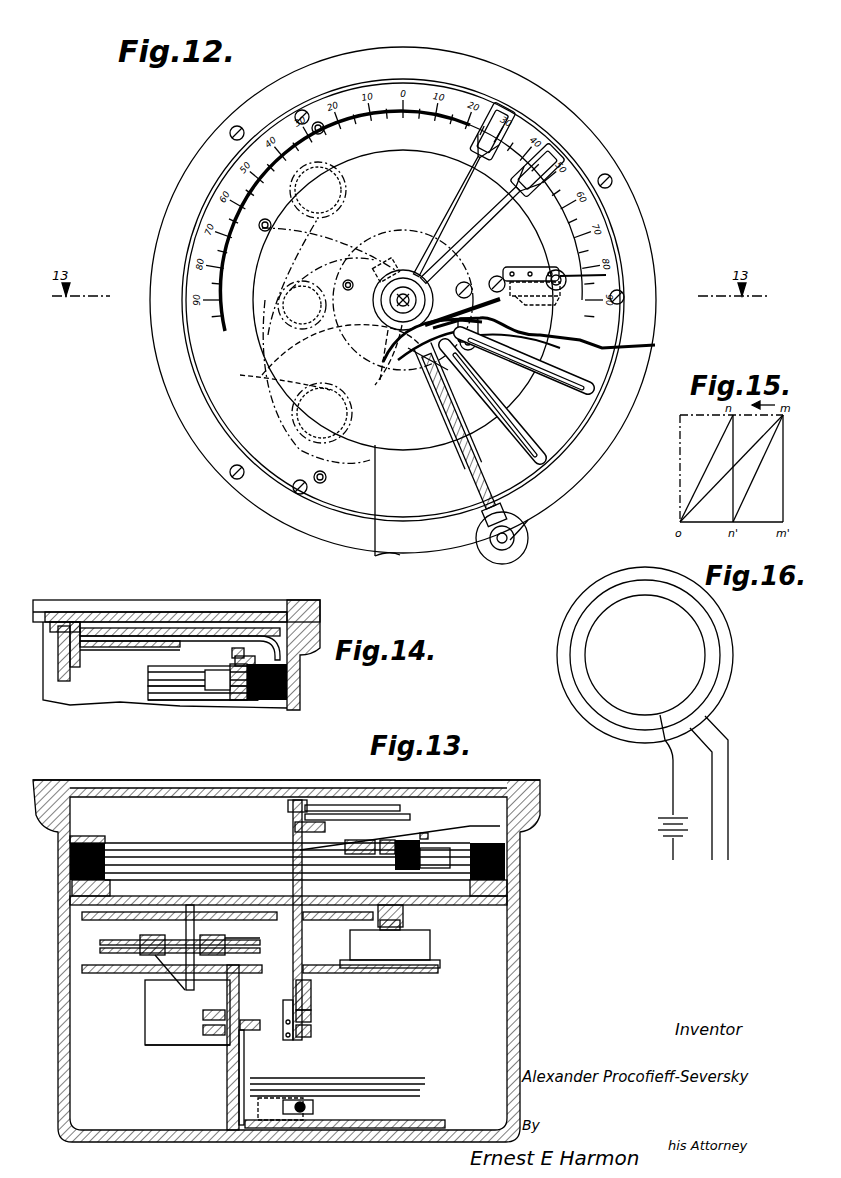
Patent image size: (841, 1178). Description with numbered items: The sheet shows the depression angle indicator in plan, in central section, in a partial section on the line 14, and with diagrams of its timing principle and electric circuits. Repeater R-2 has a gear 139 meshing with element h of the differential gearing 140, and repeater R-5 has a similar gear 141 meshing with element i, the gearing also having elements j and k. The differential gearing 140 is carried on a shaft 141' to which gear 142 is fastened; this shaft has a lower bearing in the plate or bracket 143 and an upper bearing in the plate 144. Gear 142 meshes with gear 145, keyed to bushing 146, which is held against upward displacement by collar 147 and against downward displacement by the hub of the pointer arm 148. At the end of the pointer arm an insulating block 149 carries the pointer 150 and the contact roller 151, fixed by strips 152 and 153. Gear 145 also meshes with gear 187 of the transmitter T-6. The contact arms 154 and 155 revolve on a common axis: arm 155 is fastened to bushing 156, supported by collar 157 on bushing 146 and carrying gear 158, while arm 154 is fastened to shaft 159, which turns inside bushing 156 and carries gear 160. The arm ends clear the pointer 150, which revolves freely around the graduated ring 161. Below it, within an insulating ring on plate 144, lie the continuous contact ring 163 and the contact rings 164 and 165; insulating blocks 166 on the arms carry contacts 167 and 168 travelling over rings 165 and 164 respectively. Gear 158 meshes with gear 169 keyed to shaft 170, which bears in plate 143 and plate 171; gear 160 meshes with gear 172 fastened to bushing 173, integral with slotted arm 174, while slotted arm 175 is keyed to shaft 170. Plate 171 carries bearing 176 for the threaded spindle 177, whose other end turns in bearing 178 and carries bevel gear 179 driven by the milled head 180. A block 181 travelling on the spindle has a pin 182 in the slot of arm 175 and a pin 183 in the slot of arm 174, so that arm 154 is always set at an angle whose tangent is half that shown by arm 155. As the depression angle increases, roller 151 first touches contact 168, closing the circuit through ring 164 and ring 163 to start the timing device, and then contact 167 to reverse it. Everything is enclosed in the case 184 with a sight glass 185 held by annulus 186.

In FIG. 12, the section line 14— 14 is at (455, 180).
In FIG. 12, the gear 139 is at (305, 413).
In FIG. 12, the differential gearing 140 is at (230, 375).
In FIG. 13, the differential gearing 140 is at (149, 947).
In FIG. 12, the gear 141 is at (403, 300).
In FIG. 13, the shaft 141' is at (166, 1012).
In FIG. 12, the gear 142 is at (292, 305).
In FIG. 13, the gear 142 is at (170, 935).
In FIG. 13, the plate or bracket 143 is at (105, 975).
In FIG. 13, the plate 144 is at (72, 905).
In FIG. 12, the gear 145 is at (320, 338).
In FIG. 13, the gear 145 is at (350, 920).
In FIG. 13, the bushing 146 is at (312, 995).
In FIG. 13, the collar 147 is at (325, 972).
In FIG. 13, the pointer arm 148 is at (292, 845).
In FIG. 13, the insulating block 149 is at (395, 842).
In FIG. 12, the pointer 150 is at (606, 276).
In FIG. 13, the pointer 150 is at (430, 835).
In FIG. 12, the contact roller 151 is at (556, 270).
In FIG. 13, the contact roller 151 is at (490, 872).
In FIG. 12, the strip 152 is at (522, 268).
In FIG. 13, the strip 152 is at (405, 845).
In FIG. 13, the strip 153 is at (412, 872).
In FIG. 12, the contact arm 154 is at (432, 212).
In FIG. 14, the contact arm 154 is at (130, 630).
In FIG. 13, the contact arm 154 is at (325, 805).
In FIG. 12, the contact arm 155 is at (472, 212).
In FIG. 14, the contact arm 155 is at (135, 645).
In FIG. 13, the contact arm 155 is at (360, 812).
In FIG. 13, the bushing 156 is at (312, 1015).
In FIG. 14, the collar 157 is at (80, 668).
In FIG. 13, the collar 157 is at (319, 830).
In FIG. 13, the gear 158 is at (312, 1032).
In FIG. 14, the shaft 159 is at (64, 680).
In FIG. 13, the shaft 159 is at (286, 1040).
In FIG. 13, the gear 160 is at (292, 1038).
In FIG. 12, the graduated ring 161 is at (420, 82).
In FIG. 12, the continuous contact ring 163 is at (380, 458).
In FIG. 16, the continuous contact ring 163 is at (680, 606).
In FIG. 14, the continuous contact ring 163 is at (170, 695).
In FIG. 16, the contact ring 164 is at (720, 661).
In FIG. 14, the contact ring 164 is at (148, 680).
In FIG. 13, the contact ring 164 is at (158, 835).
In FIG. 16, the contact ring 165 is at (730, 693).
In FIG. 14, the contact ring 165 is at (185, 657).
In FIG. 13, the contact ring 165 is at (185, 858).
In FIG. 14, the insulating block 166 is at (225, 700).
In FIG. 14, the contact 167 is at (250, 660).
In FIG. 14, the contact 168 is at (266, 700).
In FIG. 13, the gear 169 is at (203, 1020).
In FIG. 12, the shaft 170 is at (345, 282).
In FIG. 13, the shaft 170 is at (225, 1088).
In FIG. 13, the plate 171 is at (340, 1124).
In FIG. 13, the gear 172 is at (225, 1040).
In FIG. 13, the bushing 173 is at (225, 1085).
In FIG. 12, the slotted arm 174 is at (560, 375).
In FIG. 13, the slotted arm 174 is at (410, 1078).
In FIG. 12, the slotted arm 175 is at (510, 426).
In FIG. 13, the slotted arm 175 is at (400, 1098).
In FIG. 12, the bearing 176 is at (403, 268).
In FIG. 12, the threaded spindle 177 is at (468, 472).
In FIG. 13, the threaded spindle 177 is at (313, 1107).
In FIG. 12, the bearing 178 is at (498, 500).
In FIG. 12, the bevel gear 179 is at (530, 534).
In FIG. 12, the milled head 180 is at (488, 556).
In FIG. 12, the block 181 is at (452, 358).
In FIG. 13, the block 181 is at (265, 1120).
In FIG. 12, the pin 182 is at (432, 365).
In FIG. 12, the pin 183 is at (471, 334).
In FIG. 14, the body or case 184 is at (300, 683).
In FIG. 13, the body or case 184 is at (520, 944).
In FIG. 14, the sight glass 185 is at (208, 612).
In FIG. 13, the sight glass 185 is at (480, 790).
In FIG. 12, the annulus 186 is at (576, 122).
In FIG. 14, the annulus 186 is at (295, 605).
In FIG. 13, the annulus 186 is at (530, 786).
In FIG. 12, the gear 187 is at (545, 305).
In FIG. 13, the gear 187 is at (405, 928).
In FIG. 12, the repeater R-5 is at (318, 184).
In FIG. 13, the repeater R-5 is at (187, 1016).
In FIG. 12, the repeater R-2 is at (316, 381).
In FIG. 12, the transmitter T-6 is at (520, 347).
In FIG. 13, the transmitter T-6 is at (390, 949).
In FIG. 13, the element of differential gearing h is at (100, 950).
In FIG. 13, the element of differential gearing i is at (100, 942).
In FIG. 13, the element of differential gearing j is at (150, 960).
In FIG. 13, the element of differential gearing k is at (228, 938).